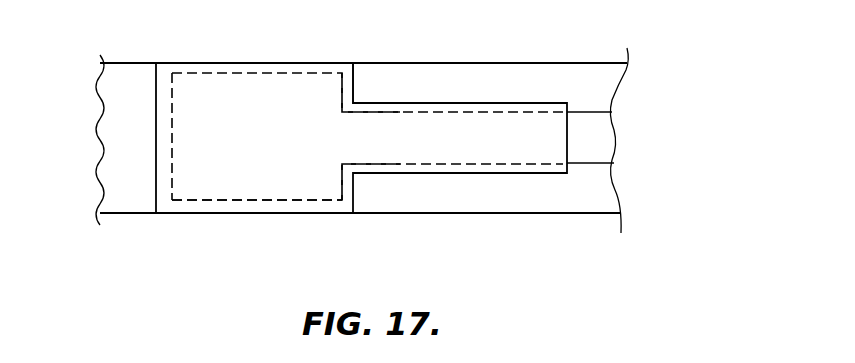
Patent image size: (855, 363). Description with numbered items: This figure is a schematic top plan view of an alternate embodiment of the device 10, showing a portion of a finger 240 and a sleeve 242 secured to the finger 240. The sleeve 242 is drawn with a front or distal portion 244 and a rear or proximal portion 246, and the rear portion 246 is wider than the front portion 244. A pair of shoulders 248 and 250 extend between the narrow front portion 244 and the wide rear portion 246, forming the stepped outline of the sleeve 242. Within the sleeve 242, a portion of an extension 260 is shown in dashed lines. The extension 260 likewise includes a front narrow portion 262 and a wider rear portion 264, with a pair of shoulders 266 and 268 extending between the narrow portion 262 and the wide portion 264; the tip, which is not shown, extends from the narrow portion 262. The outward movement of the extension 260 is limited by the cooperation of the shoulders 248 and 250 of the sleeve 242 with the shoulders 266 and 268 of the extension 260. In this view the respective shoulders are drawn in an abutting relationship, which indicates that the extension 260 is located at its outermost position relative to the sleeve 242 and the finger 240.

The electronic device 10 is at (362, 123).
The finger 240 is at (100, 150).
The sleeve 242 is at (175, 64).
The front portion 244 is at (490, 178).
The rear portion 246 is at (258, 78).
The shoulder 248 is at (357, 75).
The shoulder 250 is at (355, 188).
The extension 260 is at (593, 108).
The front narrow portion 262 is at (605, 168).
The wider rear portion 264 is at (277, 208).
The shoulder 266 is at (340, 90).
The shoulder 268 is at (343, 190).